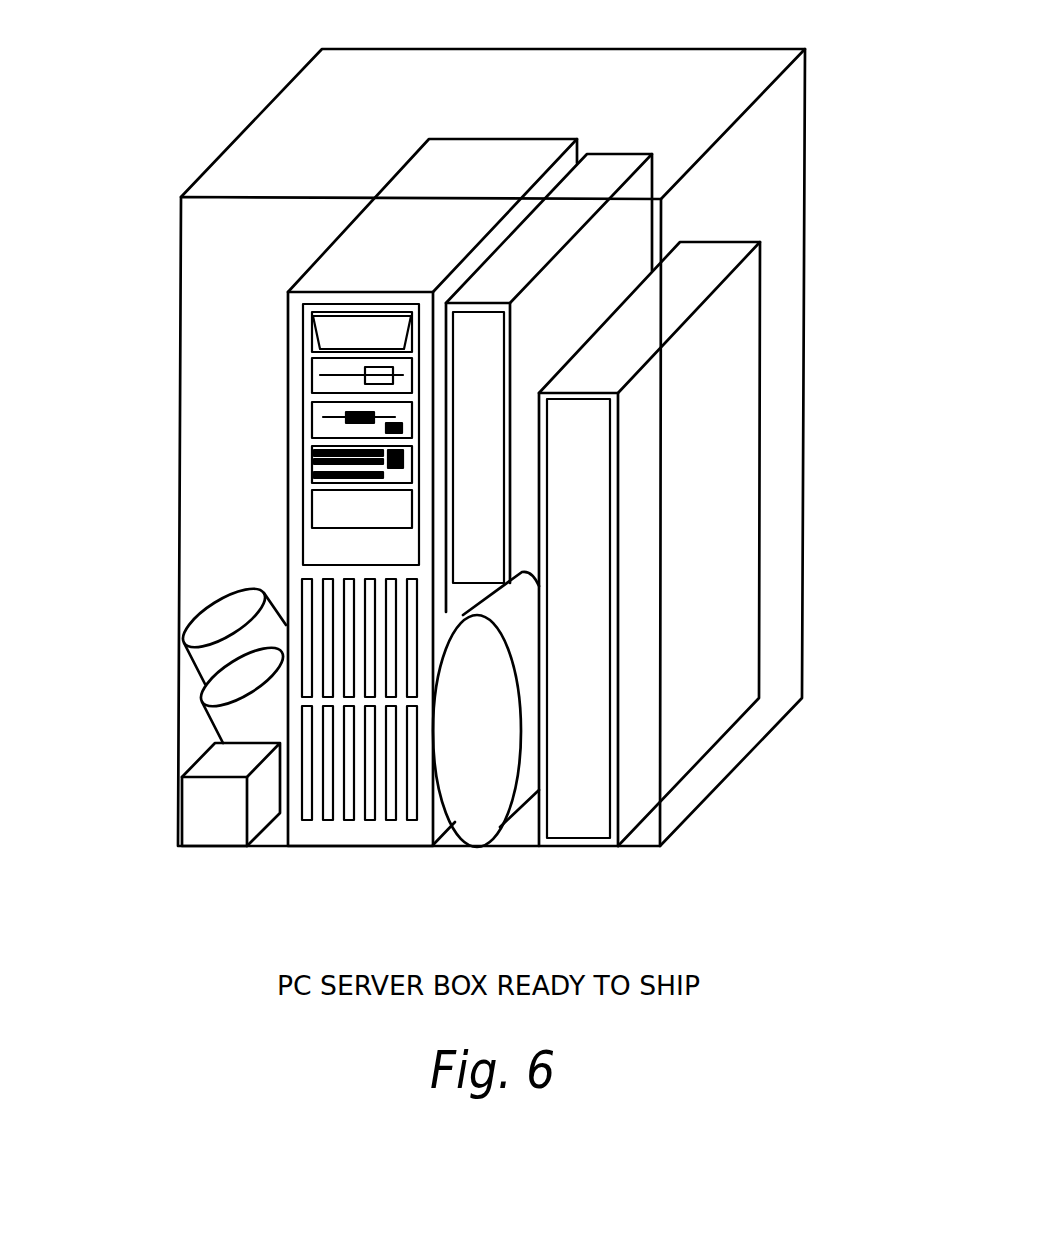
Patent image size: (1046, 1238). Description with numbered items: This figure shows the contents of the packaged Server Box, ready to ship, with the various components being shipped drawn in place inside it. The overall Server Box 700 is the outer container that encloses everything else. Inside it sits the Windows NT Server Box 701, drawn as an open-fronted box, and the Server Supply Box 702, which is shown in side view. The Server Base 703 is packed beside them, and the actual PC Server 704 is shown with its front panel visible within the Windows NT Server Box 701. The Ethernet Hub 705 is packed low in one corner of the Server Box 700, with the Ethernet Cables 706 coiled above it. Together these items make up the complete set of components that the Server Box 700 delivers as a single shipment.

The Server Box 700 is at (600, 49).
The Windows NT Server Box 701 is at (603, 166).
The Server Supply Box 702 is at (724, 579).
The Server Base 703 is at (509, 830).
The PC Server 704 is at (358, 826).
The Ethernet Hub 705 is at (215, 826).
The Ethernet Cables 706 is at (221, 683).